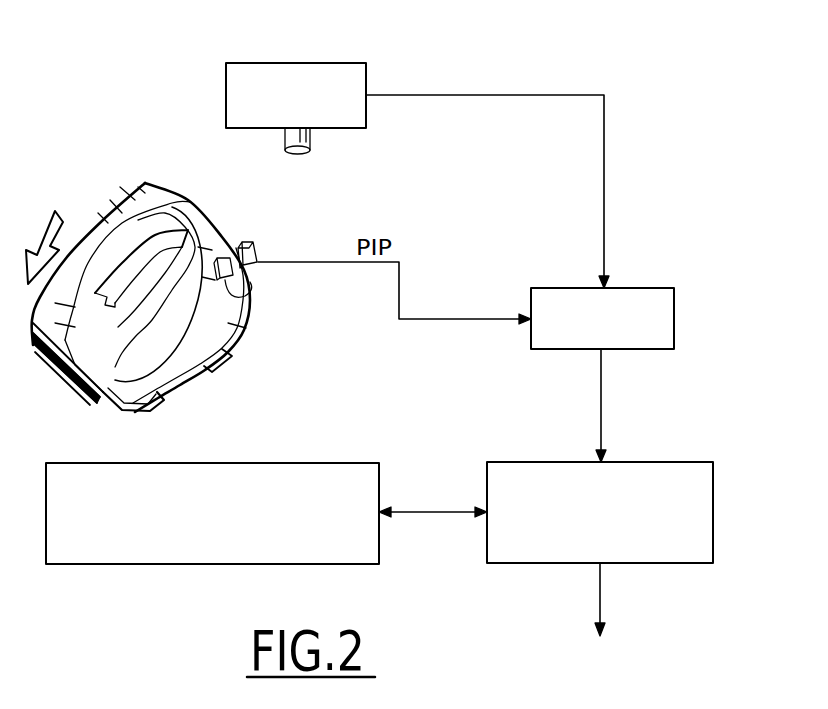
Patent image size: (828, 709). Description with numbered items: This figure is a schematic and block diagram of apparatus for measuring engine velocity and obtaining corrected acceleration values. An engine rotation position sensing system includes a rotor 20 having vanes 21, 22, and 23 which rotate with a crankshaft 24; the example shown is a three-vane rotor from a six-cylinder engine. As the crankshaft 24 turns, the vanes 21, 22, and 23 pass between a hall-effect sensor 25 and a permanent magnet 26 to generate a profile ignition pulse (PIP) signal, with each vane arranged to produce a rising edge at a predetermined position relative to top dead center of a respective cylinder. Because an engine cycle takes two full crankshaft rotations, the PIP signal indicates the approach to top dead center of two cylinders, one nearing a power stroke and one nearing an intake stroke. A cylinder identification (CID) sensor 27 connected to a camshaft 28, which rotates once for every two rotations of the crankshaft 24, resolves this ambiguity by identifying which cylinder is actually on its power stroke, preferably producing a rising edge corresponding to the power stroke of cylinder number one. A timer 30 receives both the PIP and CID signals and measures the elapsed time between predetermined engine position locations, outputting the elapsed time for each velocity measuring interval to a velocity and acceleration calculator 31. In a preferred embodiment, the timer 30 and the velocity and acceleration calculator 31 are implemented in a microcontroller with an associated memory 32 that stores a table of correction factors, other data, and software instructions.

The rotor 20 is at (162, 228).
The vane 21 is at (132, 277).
The vane 22 is at (244, 324).
The vane 23 is at (143, 417).
The crankshaft 24 is at (105, 222).
The hall-effect sensor 25 is at (252, 245).
The permanent magnet 26 is at (250, 303).
The cylinder identification (CID) sensor 27 is at (330, 63).
The camshaft 28 is at (310, 146).
The timer 30 is at (640, 288).
The velocity and acceleration calculator 31 is at (647, 462).
The memory 32 is at (268, 463).